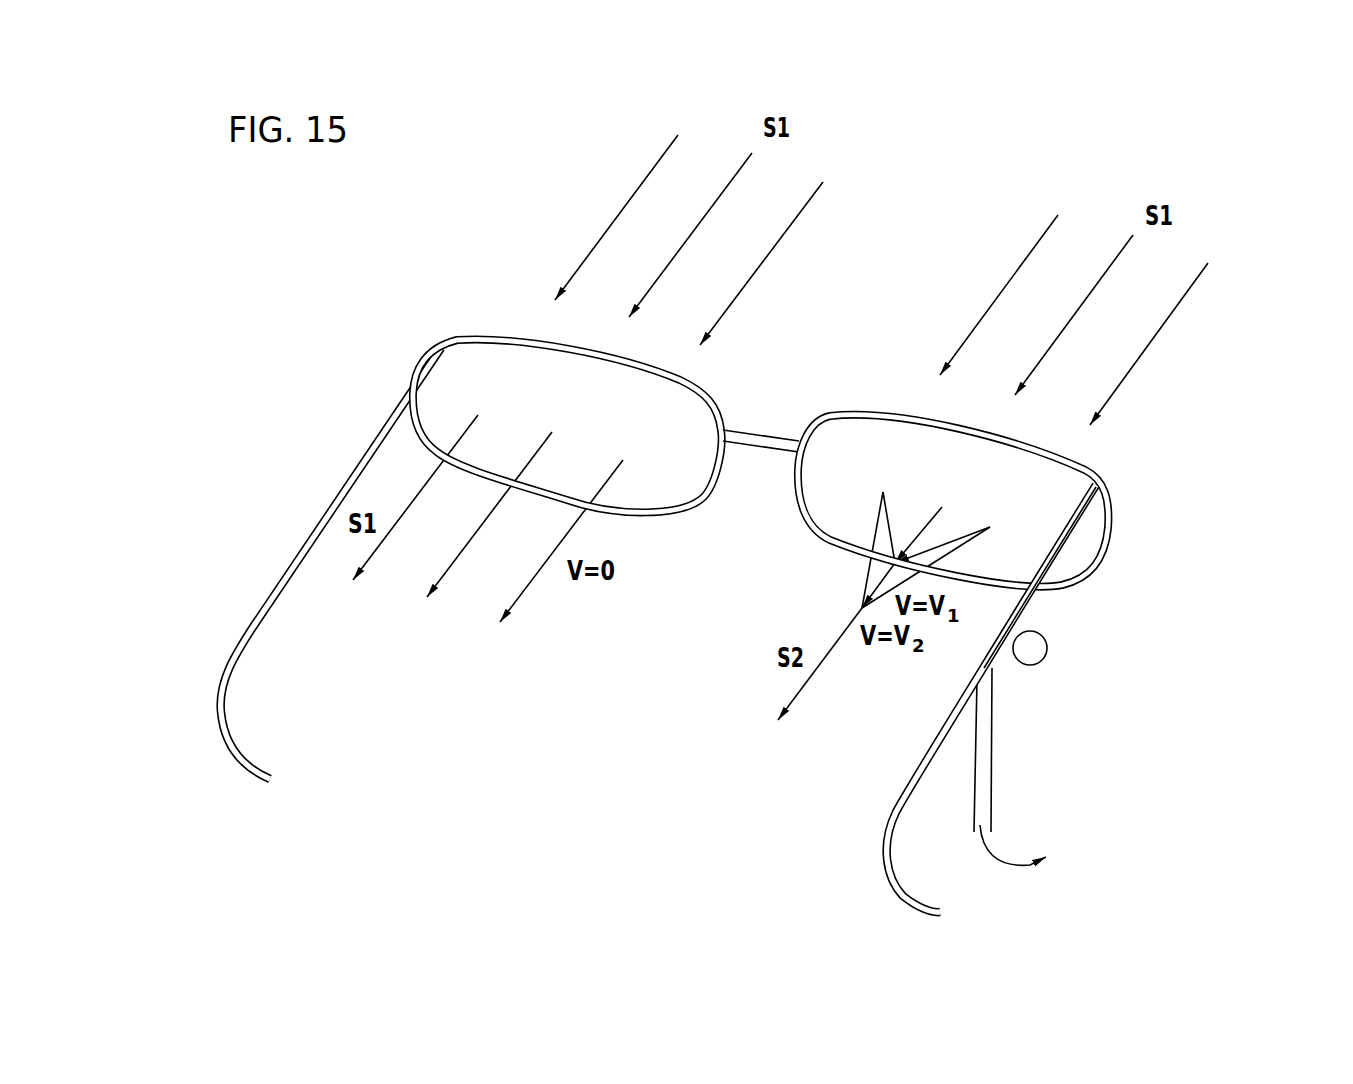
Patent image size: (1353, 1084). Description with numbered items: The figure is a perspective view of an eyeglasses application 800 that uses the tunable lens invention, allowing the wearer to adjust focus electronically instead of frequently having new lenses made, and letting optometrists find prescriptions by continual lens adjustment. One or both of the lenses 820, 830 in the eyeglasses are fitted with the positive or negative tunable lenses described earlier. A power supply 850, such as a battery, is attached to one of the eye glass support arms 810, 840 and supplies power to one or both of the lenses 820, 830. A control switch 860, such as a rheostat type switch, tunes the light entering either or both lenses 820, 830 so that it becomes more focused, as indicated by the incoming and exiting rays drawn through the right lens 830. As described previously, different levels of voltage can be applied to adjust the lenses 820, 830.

The eyeglasses application 800 is at (710, 549).
The eye glass support arm 810 is at (307, 563).
The lens 820 is at (510, 410).
The lens 830 is at (1023, 501).
The eye glass support arm 840 is at (909, 698).
The power supply 850 is at (1057, 766).
The control switch 860 is at (1102, 672).